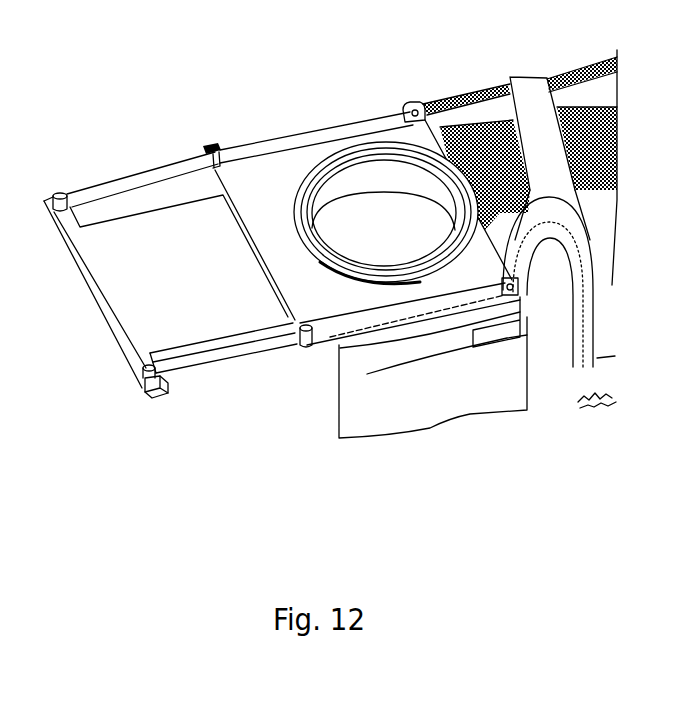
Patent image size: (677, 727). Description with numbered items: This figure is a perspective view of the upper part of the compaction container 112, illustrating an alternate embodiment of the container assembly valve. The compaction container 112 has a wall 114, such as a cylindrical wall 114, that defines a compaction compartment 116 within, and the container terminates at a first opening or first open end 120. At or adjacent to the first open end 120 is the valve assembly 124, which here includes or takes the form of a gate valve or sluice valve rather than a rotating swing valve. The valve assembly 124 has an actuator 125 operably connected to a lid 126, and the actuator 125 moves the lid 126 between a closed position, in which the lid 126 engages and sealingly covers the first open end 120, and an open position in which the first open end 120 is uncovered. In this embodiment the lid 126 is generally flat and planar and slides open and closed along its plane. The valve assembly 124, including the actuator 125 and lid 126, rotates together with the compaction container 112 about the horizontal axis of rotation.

The compaction container 112 is at (345, 413).
The wall 114 is at (401, 397).
The compaction compartment 116 is at (400, 155).
The first open end 120 is at (365, 158).
The valve assembly 124 is at (273, 101).
The actuator 125 is at (232, 158).
The lid 126 is at (155, 232).